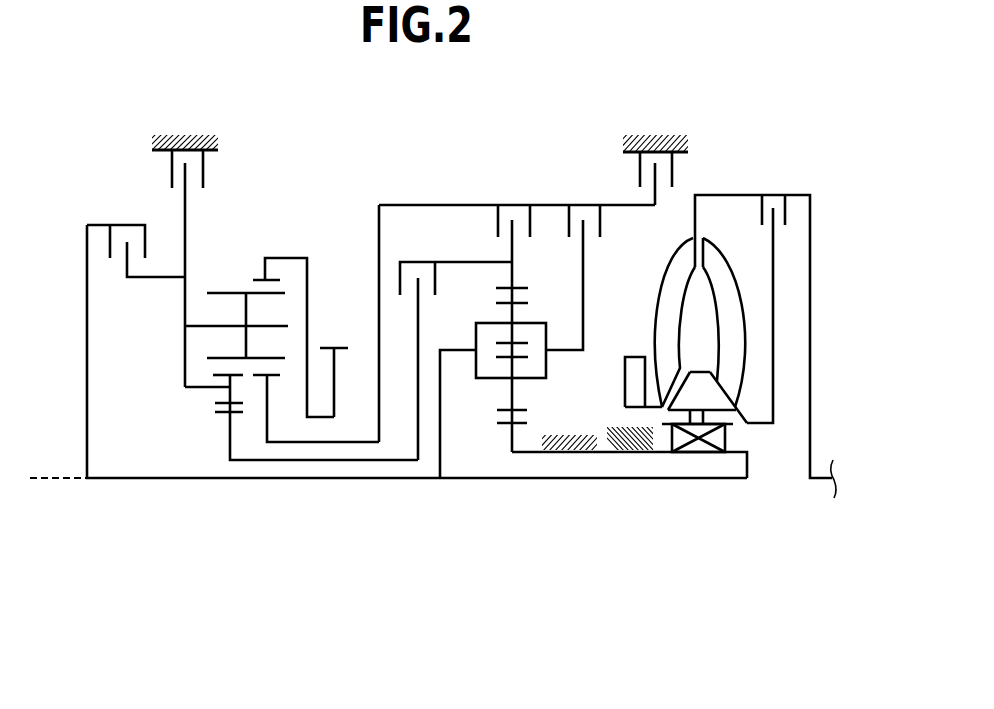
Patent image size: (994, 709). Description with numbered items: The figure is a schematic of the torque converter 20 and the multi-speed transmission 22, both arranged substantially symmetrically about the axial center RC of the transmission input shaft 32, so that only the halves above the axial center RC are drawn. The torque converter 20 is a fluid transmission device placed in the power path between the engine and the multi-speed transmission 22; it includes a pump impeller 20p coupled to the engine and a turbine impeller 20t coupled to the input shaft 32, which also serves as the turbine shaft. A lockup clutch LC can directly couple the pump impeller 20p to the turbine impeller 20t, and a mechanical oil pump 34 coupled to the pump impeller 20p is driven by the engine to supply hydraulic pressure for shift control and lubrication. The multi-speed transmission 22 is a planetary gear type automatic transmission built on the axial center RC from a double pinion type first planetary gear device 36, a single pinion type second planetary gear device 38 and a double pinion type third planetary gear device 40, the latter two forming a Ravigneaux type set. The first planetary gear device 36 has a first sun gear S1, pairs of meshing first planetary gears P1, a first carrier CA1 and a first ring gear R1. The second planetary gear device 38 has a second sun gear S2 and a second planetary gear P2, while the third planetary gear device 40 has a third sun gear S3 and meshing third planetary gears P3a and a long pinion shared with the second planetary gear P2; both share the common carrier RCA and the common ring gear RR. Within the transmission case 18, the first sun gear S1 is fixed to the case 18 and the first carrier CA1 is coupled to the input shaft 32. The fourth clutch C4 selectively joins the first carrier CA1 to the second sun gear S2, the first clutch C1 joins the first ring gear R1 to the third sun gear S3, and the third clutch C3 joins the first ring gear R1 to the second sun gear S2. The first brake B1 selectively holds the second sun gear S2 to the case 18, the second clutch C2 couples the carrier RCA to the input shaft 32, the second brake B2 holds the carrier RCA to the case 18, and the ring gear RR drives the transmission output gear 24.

The multi-speed transmission 22 is at (163, 112).
The case 18 is at (190, 140).
The second brake B2 is at (205, 268).
The first brake B1 is at (672, 178).
The first clutch C1 is at (456, 349).
The second clutch C2 is at (136, 239).
The third clutch C3 is at (513, 209).
The fourth clutch C4 is at (573, 265).
The ring gear RR is at (259, 278).
The second planetary gear P2 is at (227, 292).
The third planetary gear P3a is at (218, 374).
The carrier RCA is at (185, 342).
The second sun gear S2 is at (280, 376).
The third sun gear S3 is at (215, 410).
The transmission output gear 24 is at (340, 347).
The first ring gear R1 is at (515, 286).
The first planetary gear P1 is at (541, 322).
The first carrier CA1 is at (460, 349).
The first sun gear S1 is at (497, 418).
The oil pump 34 is at (628, 380).
The torque converter 20 is at (666, 252).
The pump impeller 20p is at (668, 337).
The turbine impeller 20t is at (732, 310).
The lockup clutch LC is at (750, 205).
The input shaft 32 is at (593, 479).
The first planetary gear device 36 is at (513, 490).
The second planetary gear device 38 is at (268, 490).
The third planetary gear device 40 is at (224, 490).
The axial center RC is at (45, 480).